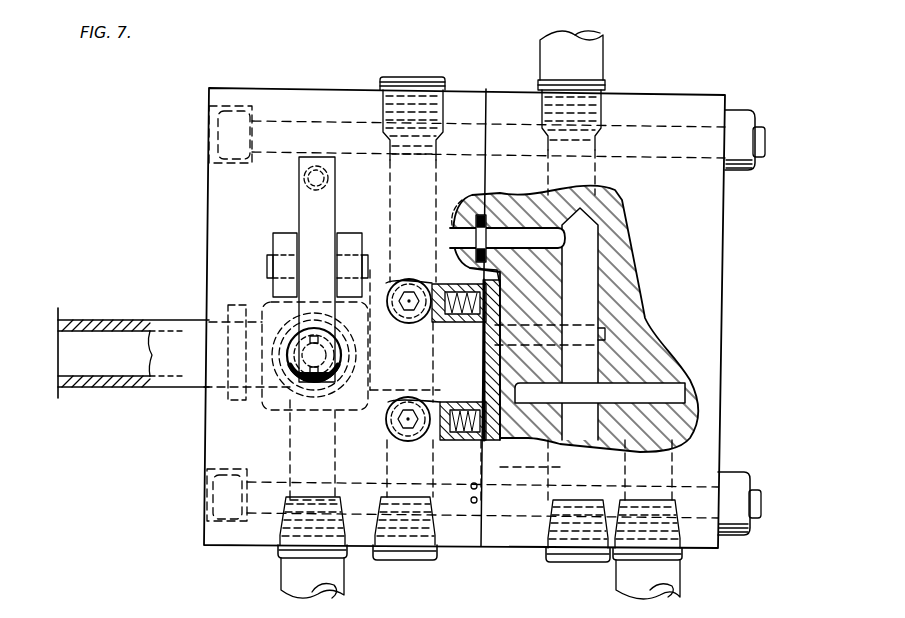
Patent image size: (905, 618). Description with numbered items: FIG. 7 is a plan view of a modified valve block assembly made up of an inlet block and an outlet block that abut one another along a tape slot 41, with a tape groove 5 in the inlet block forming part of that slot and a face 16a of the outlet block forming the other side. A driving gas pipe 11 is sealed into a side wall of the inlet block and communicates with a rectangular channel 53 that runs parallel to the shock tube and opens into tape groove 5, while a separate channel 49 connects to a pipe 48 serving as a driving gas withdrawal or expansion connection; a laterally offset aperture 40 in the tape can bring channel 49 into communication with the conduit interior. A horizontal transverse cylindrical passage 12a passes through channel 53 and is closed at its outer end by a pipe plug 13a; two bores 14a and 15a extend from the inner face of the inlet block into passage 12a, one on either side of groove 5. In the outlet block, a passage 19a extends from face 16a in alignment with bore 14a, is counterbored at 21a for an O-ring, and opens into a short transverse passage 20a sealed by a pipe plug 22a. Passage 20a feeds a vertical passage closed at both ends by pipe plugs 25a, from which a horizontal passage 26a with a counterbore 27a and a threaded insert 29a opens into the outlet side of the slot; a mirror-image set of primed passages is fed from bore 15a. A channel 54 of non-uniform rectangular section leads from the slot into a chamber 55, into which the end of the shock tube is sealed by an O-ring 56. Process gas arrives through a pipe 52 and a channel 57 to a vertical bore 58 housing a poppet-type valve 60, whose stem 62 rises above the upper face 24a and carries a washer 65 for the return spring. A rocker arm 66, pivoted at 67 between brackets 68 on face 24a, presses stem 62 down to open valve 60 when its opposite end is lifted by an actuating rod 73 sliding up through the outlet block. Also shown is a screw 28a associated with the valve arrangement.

The tape groove 5 is at (500, 430).
The driving gas pipe 11 is at (678, 577).
The cylindrical passage 12a is at (600, 243).
The pipe plug 13a is at (578, 562).
The bore 14a is at (545, 492).
The bore 15a is at (500, 232).
The face 16a is at (488, 139).
The cylindrical passage 19a is at (476, 218).
The cylindrical passage 20a is at (398, 190).
The counterbore 21a is at (478, 199).
The pipe plug 22a is at (410, 77).
The upper face 24a is at (205, 444).
The pipe plug 25a is at (396, 285).
The cylindrical passage 26a is at (426, 295).
The counterbore 27a is at (527, 349).
The screw 28a is at (386, 395).
The threaded insert 29a is at (436, 323).
The aperture 40 is at (502, 360).
The tape slot 41 is at (496, 360).
The pipe 48 is at (600, 52).
The channel 49 is at (606, 333).
The pipe 52 is at (280, 575).
The channel 53 is at (600, 394).
The channel 54 is at (405, 376).
The chamber 55 is at (284, 376).
The O-ring 56 is at (234, 305).
The channel 57 is at (298, 428).
The cylindrical bore 58 is at (315, 370).
The poppet-type valve 60 is at (283, 355).
The stem 62 is at (305, 346).
The washer 65 is at (302, 355).
The rocker arm 66 is at (299, 206).
The pivot 67 is at (270, 265).
The brackets 68 is at (342, 243).
The actuating rod 73 is at (304, 179).